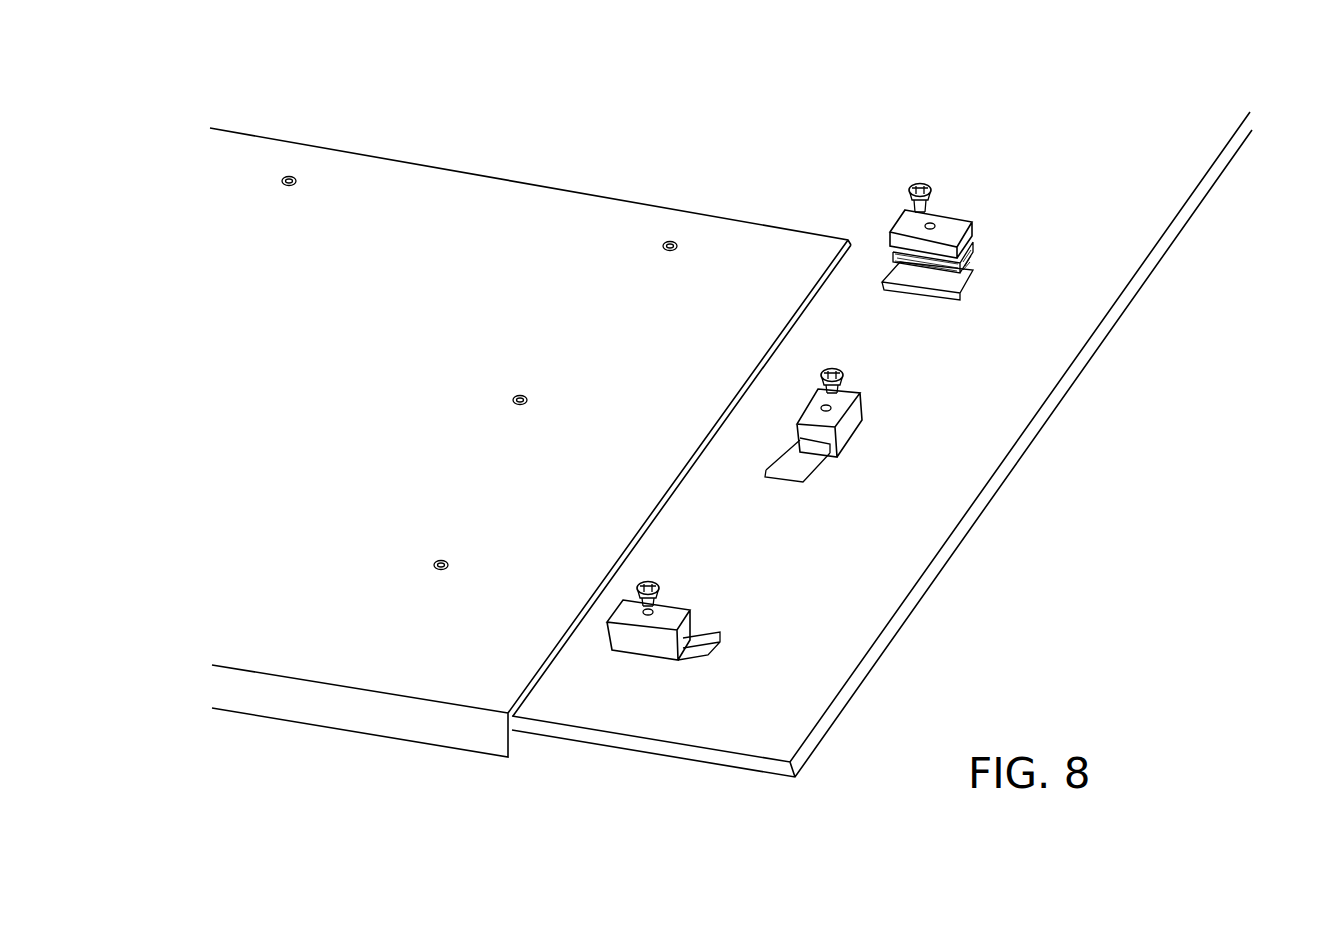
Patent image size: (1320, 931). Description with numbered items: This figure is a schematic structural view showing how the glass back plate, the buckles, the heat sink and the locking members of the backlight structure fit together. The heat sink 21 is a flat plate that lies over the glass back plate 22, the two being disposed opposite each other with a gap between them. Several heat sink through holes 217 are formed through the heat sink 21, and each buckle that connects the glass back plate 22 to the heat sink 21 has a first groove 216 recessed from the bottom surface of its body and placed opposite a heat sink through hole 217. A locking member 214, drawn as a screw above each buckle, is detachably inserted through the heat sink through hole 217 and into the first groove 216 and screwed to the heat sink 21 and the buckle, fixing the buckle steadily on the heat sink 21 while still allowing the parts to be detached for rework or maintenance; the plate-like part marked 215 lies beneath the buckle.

The heat sink 21 is at (513, 238).
The glass back plate 22 is at (922, 515).
The locking member 214 is at (910, 187).
The clamping plate 215 is at (975, 243).
The first groove 216 is at (937, 222).
The heat sink through hole 217 is at (437, 557).